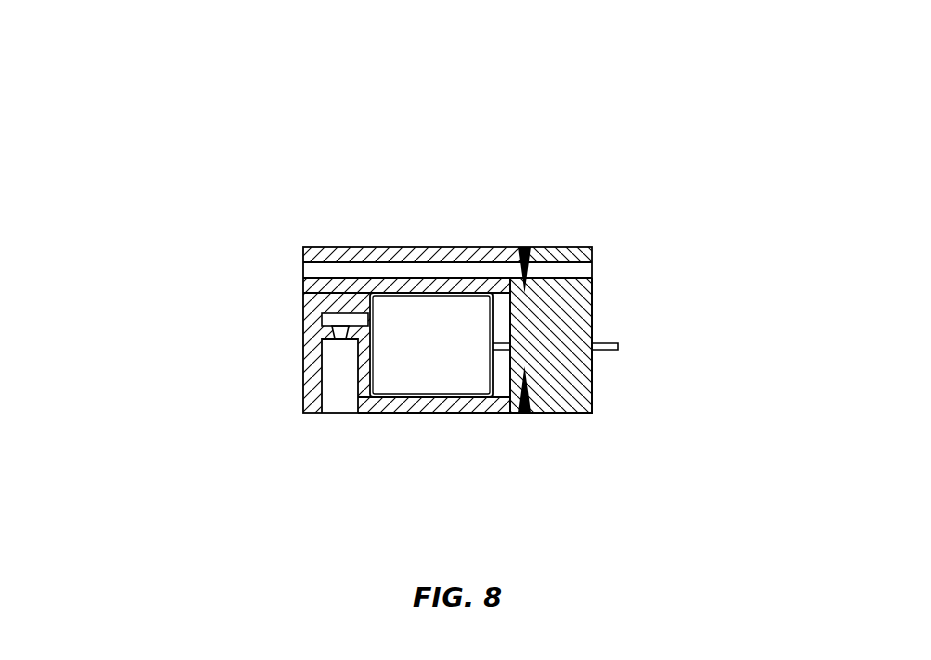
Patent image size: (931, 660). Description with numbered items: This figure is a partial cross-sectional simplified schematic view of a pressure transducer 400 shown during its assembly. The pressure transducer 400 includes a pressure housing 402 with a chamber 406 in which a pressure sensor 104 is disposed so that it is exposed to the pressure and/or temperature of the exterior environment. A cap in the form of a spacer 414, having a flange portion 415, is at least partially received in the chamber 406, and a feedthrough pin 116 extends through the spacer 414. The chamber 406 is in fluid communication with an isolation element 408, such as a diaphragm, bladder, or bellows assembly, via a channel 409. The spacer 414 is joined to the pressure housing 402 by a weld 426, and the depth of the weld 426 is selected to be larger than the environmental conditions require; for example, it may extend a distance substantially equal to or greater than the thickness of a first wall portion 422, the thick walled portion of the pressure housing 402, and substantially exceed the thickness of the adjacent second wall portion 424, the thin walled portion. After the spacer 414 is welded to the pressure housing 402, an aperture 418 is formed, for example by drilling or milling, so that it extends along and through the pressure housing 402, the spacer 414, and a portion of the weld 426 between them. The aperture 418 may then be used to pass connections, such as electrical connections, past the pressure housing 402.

The pressure transducer 400 is at (233, 187).
The pressure housing 402 is at (325, 295).
The pressure sensor 104 is at (393, 328).
The chamber 406 is at (434, 376).
The isolation element 408 is at (337, 412).
The channel 409 is at (353, 323).
The spacer 414 is at (543, 392).
The flange portion 415 is at (548, 247).
The aperture 418 is at (330, 267).
The first wall portion 422 is at (453, 253).
The second adjacent wall portion 424 is at (397, 413).
The weld 426 is at (523, 246).
The feedthrough pin 116 is at (607, 352).